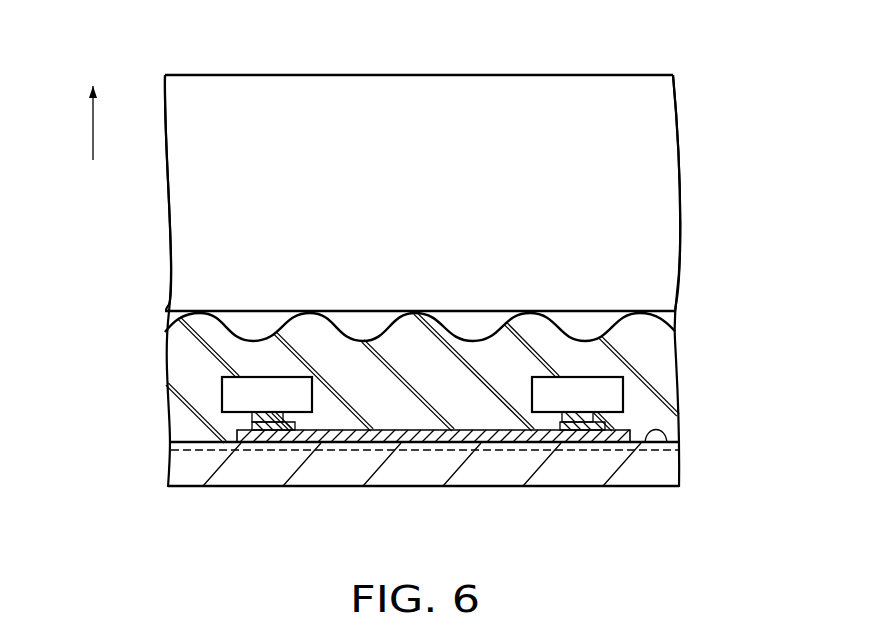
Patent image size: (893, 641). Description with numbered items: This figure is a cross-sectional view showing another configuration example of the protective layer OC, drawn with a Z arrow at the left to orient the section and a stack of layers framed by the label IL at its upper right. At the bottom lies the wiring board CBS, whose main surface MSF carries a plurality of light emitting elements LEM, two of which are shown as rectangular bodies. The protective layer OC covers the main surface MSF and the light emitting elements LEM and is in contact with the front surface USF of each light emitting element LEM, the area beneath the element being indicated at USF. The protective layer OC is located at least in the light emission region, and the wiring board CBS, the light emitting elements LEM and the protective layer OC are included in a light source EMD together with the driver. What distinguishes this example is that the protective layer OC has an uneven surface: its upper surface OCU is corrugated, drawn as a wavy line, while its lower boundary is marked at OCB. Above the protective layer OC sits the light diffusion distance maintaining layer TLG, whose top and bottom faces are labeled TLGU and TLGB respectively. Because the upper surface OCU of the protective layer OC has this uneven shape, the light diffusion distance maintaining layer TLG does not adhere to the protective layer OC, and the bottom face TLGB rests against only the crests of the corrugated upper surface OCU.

The Z-axis direction Z is at (92, 105).
The insulating layer / layered structure IL is at (688, 60).
The light diffusion distance maintaining layer TLG is at (660, 199).
The upper surface of transparent layer TLGU is at (362, 75).
The bottom surface of transparent layer TLGB is at (588, 310).
The light source EMD is at (162, 324).
The upper surface OCU is at (336, 322).
The protective layer OC is at (185, 420).
The bottom surface of overcoat OCB is at (663, 443).
The light emitting element LEM is at (216, 387).
The front surface USF is at (262, 377).
The main surface MSF is at (400, 420).
The wiring board CBS is at (331, 489).